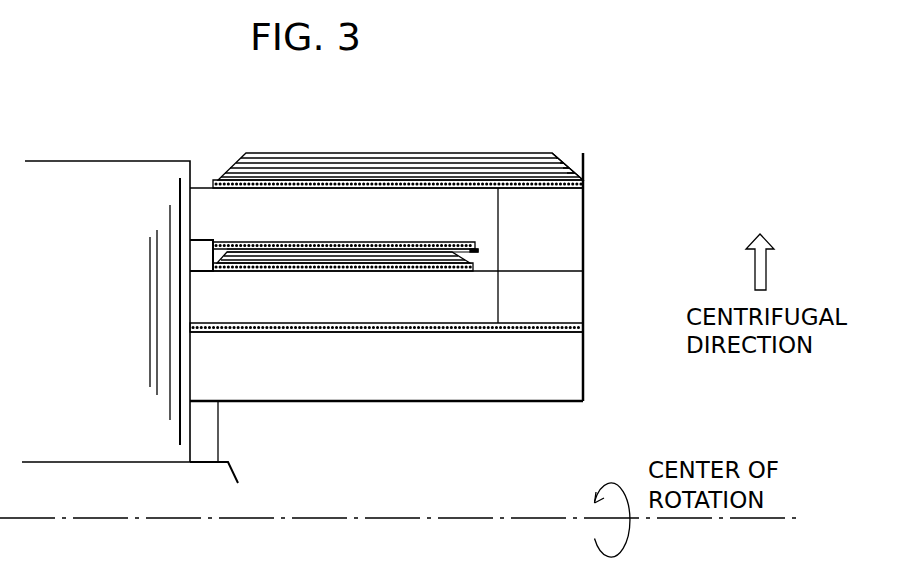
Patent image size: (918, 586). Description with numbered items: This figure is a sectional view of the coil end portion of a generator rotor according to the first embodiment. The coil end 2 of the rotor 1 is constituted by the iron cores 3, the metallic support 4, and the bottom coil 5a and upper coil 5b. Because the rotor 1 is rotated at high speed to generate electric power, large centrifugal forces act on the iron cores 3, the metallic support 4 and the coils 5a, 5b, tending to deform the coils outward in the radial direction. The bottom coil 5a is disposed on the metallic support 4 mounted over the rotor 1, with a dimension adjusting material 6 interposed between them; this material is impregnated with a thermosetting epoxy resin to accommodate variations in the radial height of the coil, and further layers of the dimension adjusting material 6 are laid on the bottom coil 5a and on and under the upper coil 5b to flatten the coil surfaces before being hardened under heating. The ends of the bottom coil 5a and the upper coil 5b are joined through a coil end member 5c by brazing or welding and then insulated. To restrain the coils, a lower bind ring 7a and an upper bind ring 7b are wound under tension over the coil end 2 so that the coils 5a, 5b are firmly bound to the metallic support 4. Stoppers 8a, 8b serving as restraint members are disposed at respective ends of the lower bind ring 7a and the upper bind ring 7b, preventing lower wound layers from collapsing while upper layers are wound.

The rotor 1 is at (108, 148).
The coil end 2 is at (575, 440).
The iron cores 3 is at (150, 322).
The metallic support 4 is at (418, 404).
The bottom coil 5a is at (392, 297).
The upper coil 5b is at (327, 218).
The coil end member 5c is at (565, 297).
The dimension adjusting material 6 is at (470, 242).
The lower bind ring 7a is at (438, 252).
The upper bind ring 7b is at (242, 153).
The stopper 8a is at (470, 250).
The stopper 8b is at (573, 163).